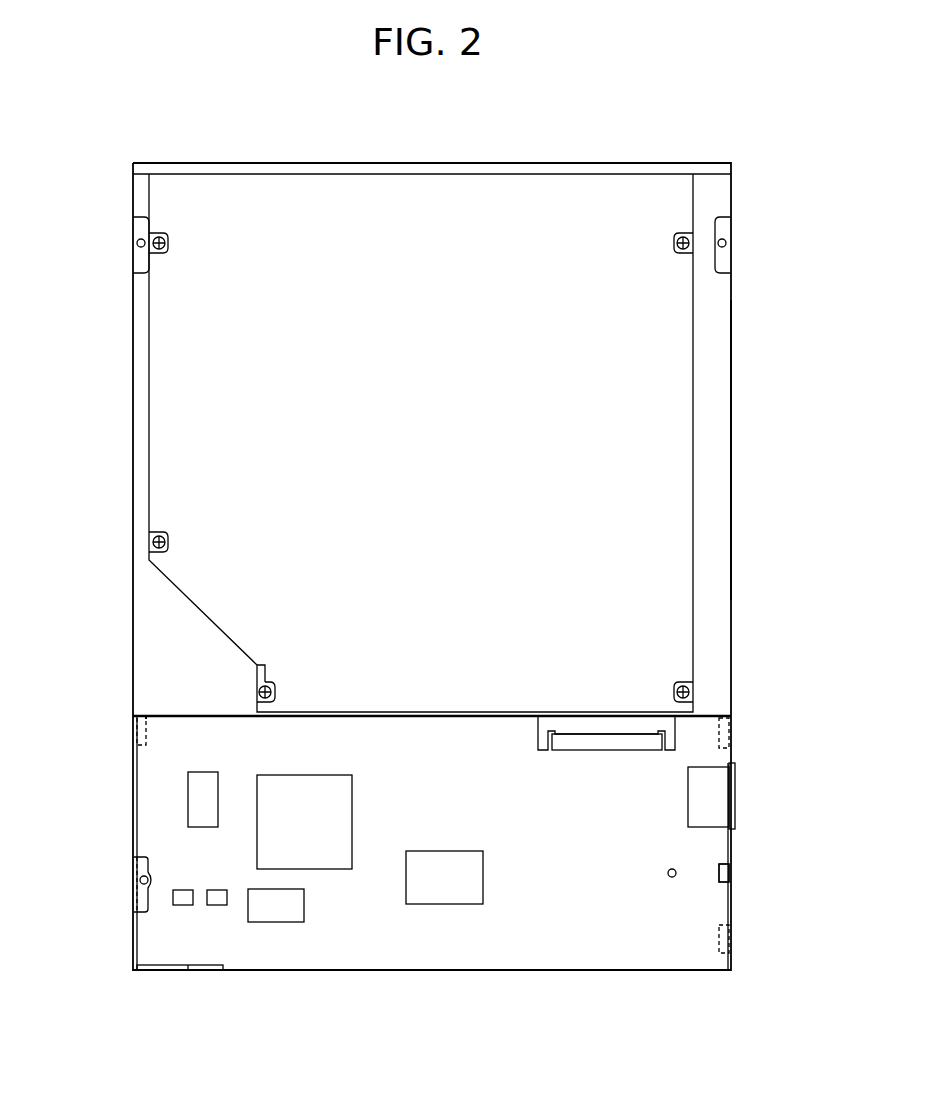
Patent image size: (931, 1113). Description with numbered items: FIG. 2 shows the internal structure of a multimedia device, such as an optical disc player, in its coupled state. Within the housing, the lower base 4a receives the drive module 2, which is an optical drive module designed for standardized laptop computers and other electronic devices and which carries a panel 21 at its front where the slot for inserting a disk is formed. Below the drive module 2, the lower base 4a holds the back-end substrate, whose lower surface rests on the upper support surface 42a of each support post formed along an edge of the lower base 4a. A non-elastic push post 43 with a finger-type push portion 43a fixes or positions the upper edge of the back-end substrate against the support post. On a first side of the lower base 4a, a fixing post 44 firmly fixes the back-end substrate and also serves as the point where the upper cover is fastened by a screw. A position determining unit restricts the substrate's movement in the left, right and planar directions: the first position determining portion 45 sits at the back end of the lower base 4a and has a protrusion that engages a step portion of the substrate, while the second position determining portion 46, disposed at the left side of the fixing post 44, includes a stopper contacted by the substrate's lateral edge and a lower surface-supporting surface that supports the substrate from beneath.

The drive module 2 is at (693, 383).
The panel 21 is at (525, 162).
The lower base 4a is at (718, 495).
The upper support surface 42a is at (727, 733).
The non-elastic push post 43 is at (745, 861).
The finger-type push portion 43a is at (730, 873).
The fixing post 44 is at (140, 898).
The first position determining portion 45 is at (200, 982).
The second position determining portion 46 is at (140, 731).